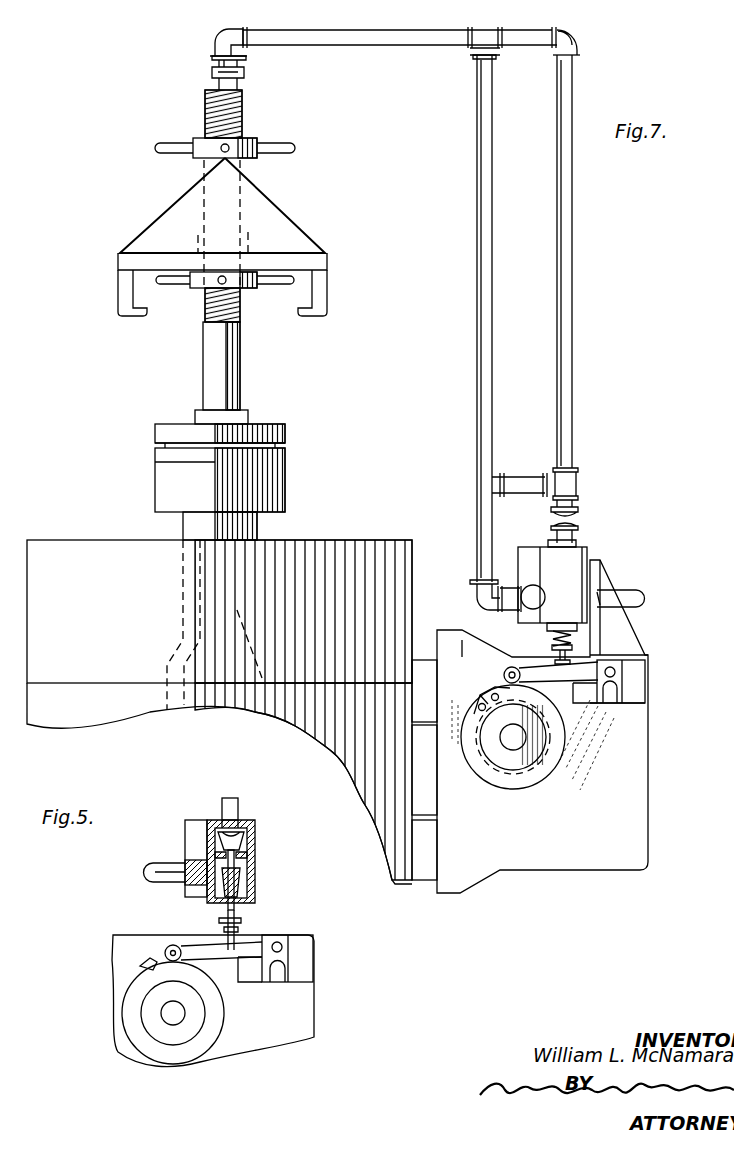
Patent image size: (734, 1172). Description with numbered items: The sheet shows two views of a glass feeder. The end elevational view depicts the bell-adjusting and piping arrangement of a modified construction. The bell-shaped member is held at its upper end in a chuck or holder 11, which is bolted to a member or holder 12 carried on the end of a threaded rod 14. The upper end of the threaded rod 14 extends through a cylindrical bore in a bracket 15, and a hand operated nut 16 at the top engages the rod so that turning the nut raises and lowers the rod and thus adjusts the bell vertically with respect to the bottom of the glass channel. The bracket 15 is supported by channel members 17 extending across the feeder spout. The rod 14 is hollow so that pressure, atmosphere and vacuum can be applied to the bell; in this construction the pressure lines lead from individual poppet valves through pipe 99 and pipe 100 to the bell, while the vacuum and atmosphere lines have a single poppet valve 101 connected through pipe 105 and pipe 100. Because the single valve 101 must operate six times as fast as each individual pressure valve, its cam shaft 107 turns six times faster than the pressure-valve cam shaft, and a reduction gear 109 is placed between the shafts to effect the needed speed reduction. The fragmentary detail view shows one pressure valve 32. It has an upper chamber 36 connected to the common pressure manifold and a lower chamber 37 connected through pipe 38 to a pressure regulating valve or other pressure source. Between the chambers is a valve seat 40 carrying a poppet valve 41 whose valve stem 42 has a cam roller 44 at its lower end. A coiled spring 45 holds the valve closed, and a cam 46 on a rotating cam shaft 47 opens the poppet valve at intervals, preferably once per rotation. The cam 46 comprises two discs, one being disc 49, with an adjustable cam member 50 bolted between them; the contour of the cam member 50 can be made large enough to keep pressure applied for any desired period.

In FIG. 7, the chuck or holder 11 is at (286, 492).
In FIG. 7, the member or holder 12 is at (286, 430).
In FIG. 7, the threaded rod 14 is at (244, 370).
In FIG. 7, the bracket 15 is at (302, 232).
In FIG. 7, the hand operated nut 16 is at (292, 148).
In FIG. 7, the channel members 17 is at (317, 296).
In FIG. 5, the valve 32 is at (254, 806).
In FIG. 5, the upper chamber 36 is at (248, 838).
In FIG. 5, the lower chamber 37 is at (255, 873).
In FIG. 5, the pipe 38 is at (162, 865).
In FIG. 5, the valve seat 40 is at (214, 824).
In FIG. 5, the poppet valve 41 is at (253, 855).
In FIG. 5, the valve stem 42 is at (245, 904).
In FIG. 5, the cam roller 44 is at (140, 936).
In FIG. 5, the coiled spring 45 is at (225, 916).
In FIG. 5, the cam 46 is at (118, 1000).
In FIG. 5, the cam shaft 47 is at (172, 1018).
In FIG. 5, the disc 49 is at (137, 1030).
In FIG. 5, the cam member 50 is at (152, 966).
In FIG. 7, the pipe 99 is at (492, 390).
In FIG. 7, the pipe 100 is at (246, 62).
In FIG. 7, the poppet valve 101 is at (576, 558).
In FIG. 7, the pipe 105 is at (572, 392).
In FIG. 7, the cam shaft 107 is at (518, 745).
In FIG. 7, the reduction gear 109 is at (620, 776).